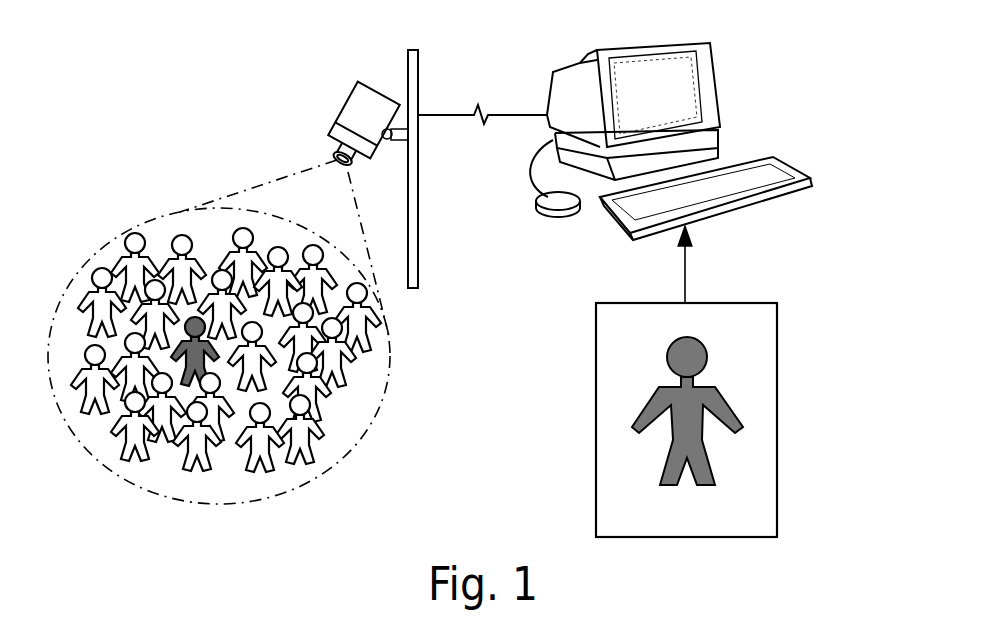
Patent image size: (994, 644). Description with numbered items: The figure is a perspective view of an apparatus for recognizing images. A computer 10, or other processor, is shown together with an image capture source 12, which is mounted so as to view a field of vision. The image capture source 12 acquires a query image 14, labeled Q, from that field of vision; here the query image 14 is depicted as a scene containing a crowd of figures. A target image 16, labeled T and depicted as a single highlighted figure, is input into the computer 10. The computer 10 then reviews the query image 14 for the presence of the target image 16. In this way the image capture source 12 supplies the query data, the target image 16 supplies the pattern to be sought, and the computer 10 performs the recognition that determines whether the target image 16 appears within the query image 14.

The computer 10 is at (606, 50).
The image capture source 12 is at (373, 82).
The query image 14 is at (67, 262).
The target image 16 is at (808, 372).